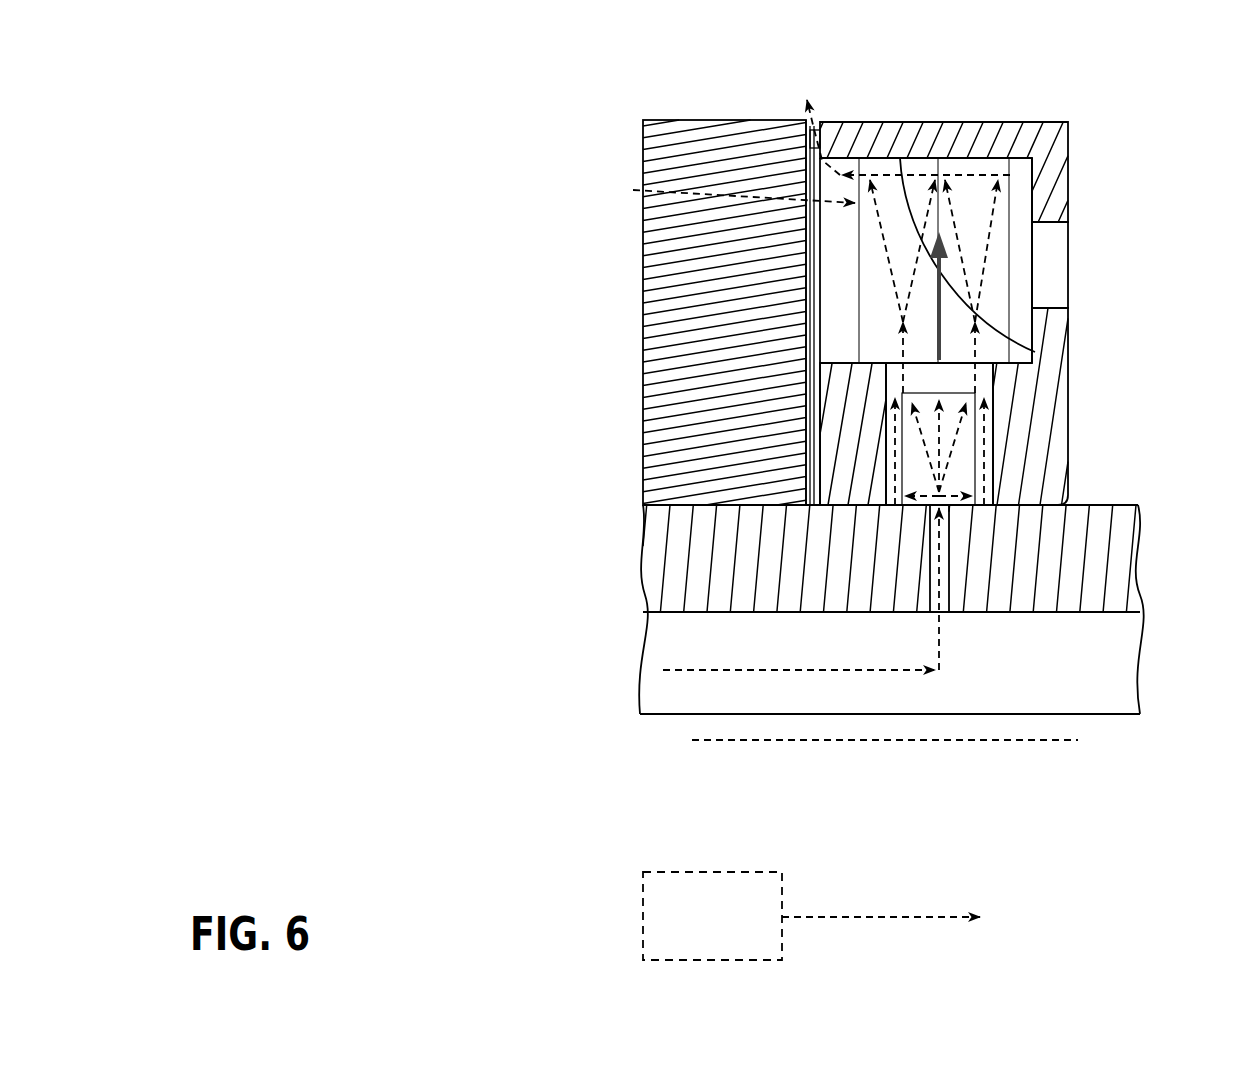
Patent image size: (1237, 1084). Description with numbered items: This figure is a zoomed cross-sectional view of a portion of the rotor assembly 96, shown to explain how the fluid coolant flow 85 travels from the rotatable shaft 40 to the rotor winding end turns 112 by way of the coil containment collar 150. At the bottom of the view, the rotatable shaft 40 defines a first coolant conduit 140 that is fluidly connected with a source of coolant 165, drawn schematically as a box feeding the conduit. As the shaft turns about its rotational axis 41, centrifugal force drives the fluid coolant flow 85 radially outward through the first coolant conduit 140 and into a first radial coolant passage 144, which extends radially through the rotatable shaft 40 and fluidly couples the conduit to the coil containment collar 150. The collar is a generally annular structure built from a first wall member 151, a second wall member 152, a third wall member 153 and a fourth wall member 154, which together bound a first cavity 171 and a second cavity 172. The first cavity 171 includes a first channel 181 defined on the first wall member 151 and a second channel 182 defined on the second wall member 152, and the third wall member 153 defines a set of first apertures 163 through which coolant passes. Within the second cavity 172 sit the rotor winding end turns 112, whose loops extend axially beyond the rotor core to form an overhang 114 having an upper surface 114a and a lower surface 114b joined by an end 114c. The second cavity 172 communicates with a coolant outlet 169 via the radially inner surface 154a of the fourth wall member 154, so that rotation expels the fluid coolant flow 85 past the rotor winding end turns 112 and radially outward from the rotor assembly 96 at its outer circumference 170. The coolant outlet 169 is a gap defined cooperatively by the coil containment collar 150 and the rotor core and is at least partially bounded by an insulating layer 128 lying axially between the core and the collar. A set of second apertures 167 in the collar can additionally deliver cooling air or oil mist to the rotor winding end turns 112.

The rotor assembly 96 is at (612, 81).
The outer circumference 170 is at (775, 107).
The coolant outlet 169 is at (821, 120).
The fluid coolant flow 85 is at (906, 140).
The fourth wall member 154 is at (953, 132).
The upper surface 114a is at (985, 150).
The overhang 114 is at (1003, 165).
The insulating layer 128 is at (808, 167).
The coil containment collar 150 is at (855, 280).
The end 114c is at (1036, 236).
The second cavity 172 is at (1034, 254).
The set of second apertures 167 is at (1075, 270).
The rotor winding end turns 112 is at (1005, 290).
The radially inner surface 154a is at (1003, 296).
The second wall member 152 is at (1053, 358).
The lower surface 114b is at (1022, 352).
The third wall member 153 is at (866, 373).
The set of first apertures 163 is at (891, 385).
The first wall member 151 is at (824, 412).
The first channel 181 is at (893, 455).
The first cavity 171 is at (959, 442).
The second channel 182 is at (993, 463).
The rotatable shaft 40 is at (885, 609).
The first radial coolant passage 144 is at (932, 561).
The first coolant conduit 140 is at (824, 707).
The rotational axis 41 is at (854, 744).
The source of coolant 165 is at (696, 934).